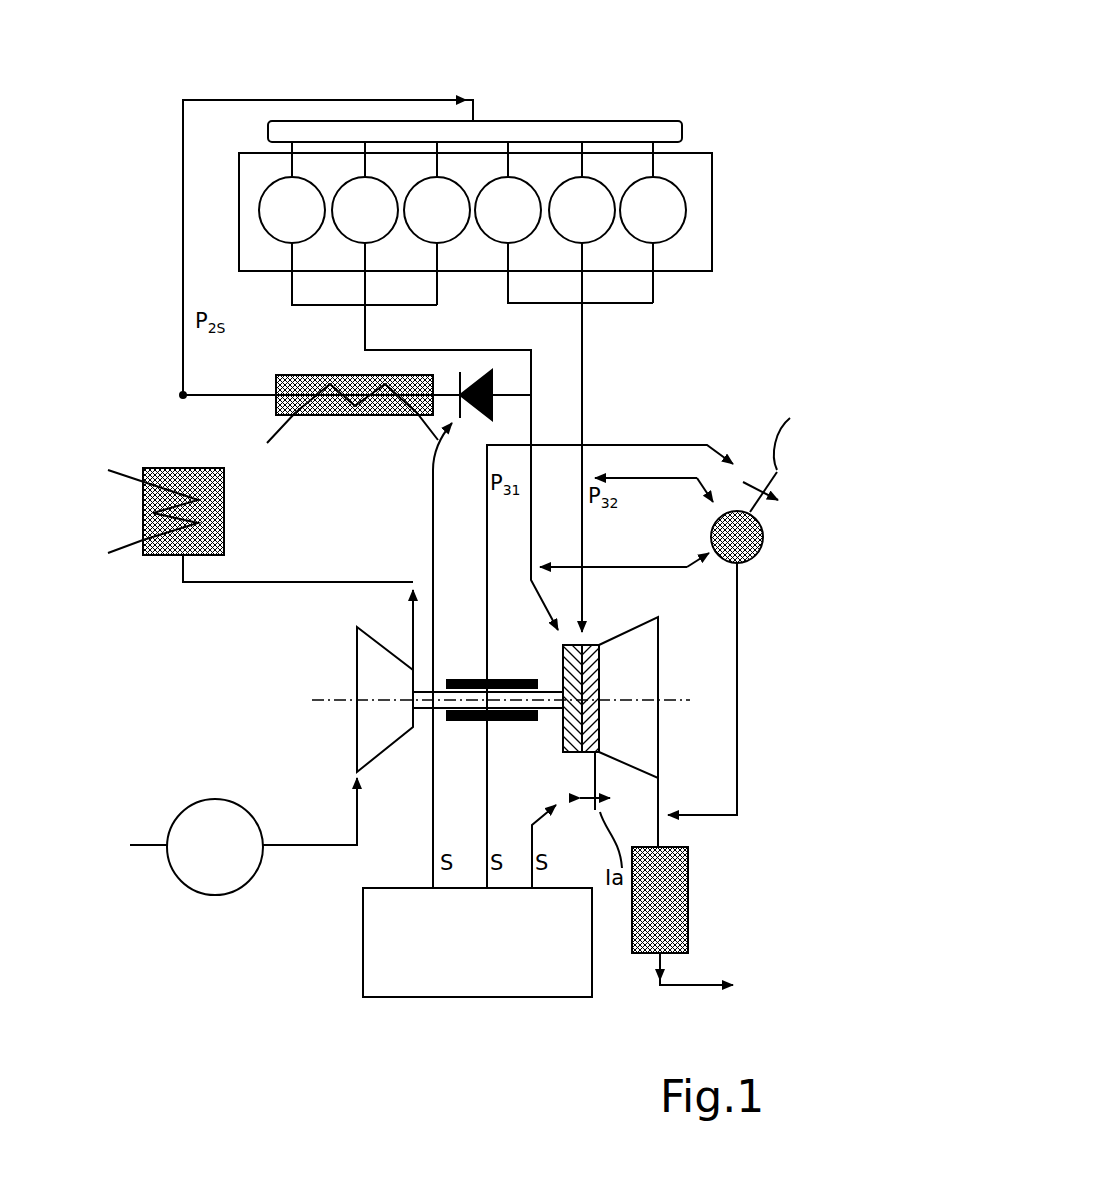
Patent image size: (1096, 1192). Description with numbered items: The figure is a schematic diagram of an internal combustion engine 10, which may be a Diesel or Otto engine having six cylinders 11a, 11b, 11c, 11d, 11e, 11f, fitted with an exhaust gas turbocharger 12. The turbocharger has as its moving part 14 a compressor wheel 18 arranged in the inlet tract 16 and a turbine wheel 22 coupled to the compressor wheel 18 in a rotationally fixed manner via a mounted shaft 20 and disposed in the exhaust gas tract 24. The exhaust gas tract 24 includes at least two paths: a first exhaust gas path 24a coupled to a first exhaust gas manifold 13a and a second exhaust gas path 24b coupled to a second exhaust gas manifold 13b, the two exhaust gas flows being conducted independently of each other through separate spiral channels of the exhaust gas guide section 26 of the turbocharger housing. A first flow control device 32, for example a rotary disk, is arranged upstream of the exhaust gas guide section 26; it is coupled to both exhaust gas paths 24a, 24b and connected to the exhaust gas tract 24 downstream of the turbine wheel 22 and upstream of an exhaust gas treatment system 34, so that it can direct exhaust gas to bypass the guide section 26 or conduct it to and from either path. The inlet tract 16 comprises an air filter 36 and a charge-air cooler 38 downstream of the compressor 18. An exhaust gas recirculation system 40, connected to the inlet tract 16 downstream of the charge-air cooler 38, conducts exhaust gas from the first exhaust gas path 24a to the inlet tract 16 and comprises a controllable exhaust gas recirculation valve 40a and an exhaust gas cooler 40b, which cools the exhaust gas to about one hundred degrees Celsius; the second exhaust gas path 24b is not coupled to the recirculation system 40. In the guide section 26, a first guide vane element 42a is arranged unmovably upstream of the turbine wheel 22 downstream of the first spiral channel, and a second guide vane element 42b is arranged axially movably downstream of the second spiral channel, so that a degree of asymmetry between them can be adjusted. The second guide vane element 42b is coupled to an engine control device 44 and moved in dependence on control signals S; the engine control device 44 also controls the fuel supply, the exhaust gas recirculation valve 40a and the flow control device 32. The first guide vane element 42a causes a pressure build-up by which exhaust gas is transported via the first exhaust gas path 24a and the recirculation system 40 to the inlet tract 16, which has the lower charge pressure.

The internal combustion engine 10 is at (654, 80).
The cylinder 11a is at (348, 223).
The cylinder 11b is at (365, 192).
The cylinder 11c is at (437, 223).
The cylinder 11d is at (564, 222).
The cylinder 11e is at (582, 192).
The cylinder 11f is at (653, 222).
The exhaust gas turbocharger 12 is at (285, 658).
The first exhaust gas manifold 13a is at (331, 316).
The second exhaust gas manifold 13b is at (614, 321).
The moving part 14 is at (406, 768).
The inlet tract 16 is at (183, 425).
The compressor wheel 18 is at (378, 725).
The shaft 20 is at (560, 707).
The turbine wheel 22 is at (640, 667).
The exhaust gas tract 24 is at (662, 828).
The first exhaust gas path 24a is at (532, 368).
The second exhaust gas path 24b is at (583, 405).
The exhaust gas guide section 26 is at (569, 612).
The first flow control device 32 is at (755, 555).
The exhaust gas treatment system 34 is at (688, 915).
The air filter 36 is at (229, 860).
The charge-air cooler 38 is at (224, 510).
The exhaust gas recirculation system 40 is at (238, 371).
The exhaust gas recirculation valve 40a is at (483, 373).
The exhaust gas cooler 40b is at (334, 416).
The first guide vane element 42a is at (556, 765).
The second guide vane element 42b is at (602, 617).
The engine control device 44 is at (484, 953).